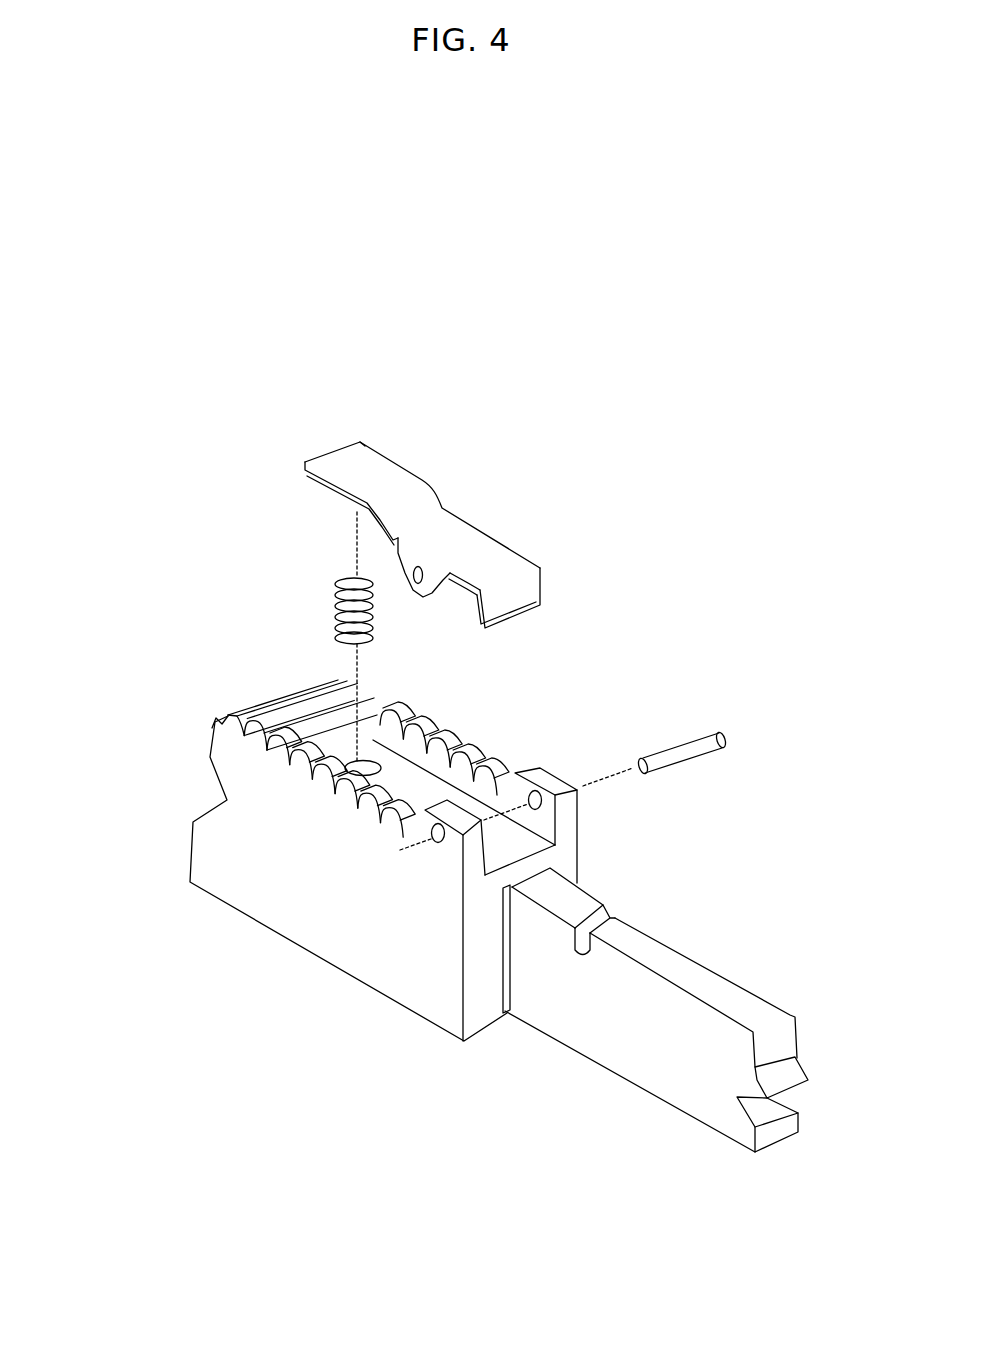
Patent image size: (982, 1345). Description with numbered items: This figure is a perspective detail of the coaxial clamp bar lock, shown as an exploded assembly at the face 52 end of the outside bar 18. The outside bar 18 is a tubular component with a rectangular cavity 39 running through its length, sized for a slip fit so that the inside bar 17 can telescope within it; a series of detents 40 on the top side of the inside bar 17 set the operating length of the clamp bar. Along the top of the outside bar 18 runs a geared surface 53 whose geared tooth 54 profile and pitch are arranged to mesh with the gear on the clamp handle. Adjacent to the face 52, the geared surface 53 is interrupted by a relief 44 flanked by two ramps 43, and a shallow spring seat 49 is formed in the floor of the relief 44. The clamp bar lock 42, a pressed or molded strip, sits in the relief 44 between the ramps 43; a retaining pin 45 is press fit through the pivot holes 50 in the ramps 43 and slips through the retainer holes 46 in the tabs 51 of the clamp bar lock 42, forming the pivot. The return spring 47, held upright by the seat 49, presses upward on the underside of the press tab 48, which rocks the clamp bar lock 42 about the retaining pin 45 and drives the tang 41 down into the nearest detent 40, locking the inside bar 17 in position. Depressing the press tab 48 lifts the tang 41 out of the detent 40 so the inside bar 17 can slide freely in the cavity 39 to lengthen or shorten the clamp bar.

The inside bar 17 is at (702, 1043).
The outside bar 18 is at (298, 880).
The cavity 39 is at (503, 955).
The detent 40 is at (604, 916).
The tang 41 is at (515, 608).
The clamp bar lock 42 is at (470, 487).
The ramps 43 is at (540, 788).
The relief 44 is at (422, 790).
The retaining pin 45 is at (712, 747).
The retainer holes 46 is at (412, 574).
The return spring 47 is at (333, 598).
The press tab 48 is at (357, 463).
The spring seat 49 is at (365, 768).
The pivot holes 50 is at (533, 807).
The tabs 51 is at (428, 590).
The face 52 is at (487, 910).
The geared surface 53 is at (307, 703).
The geared tooth 54 is at (257, 743).